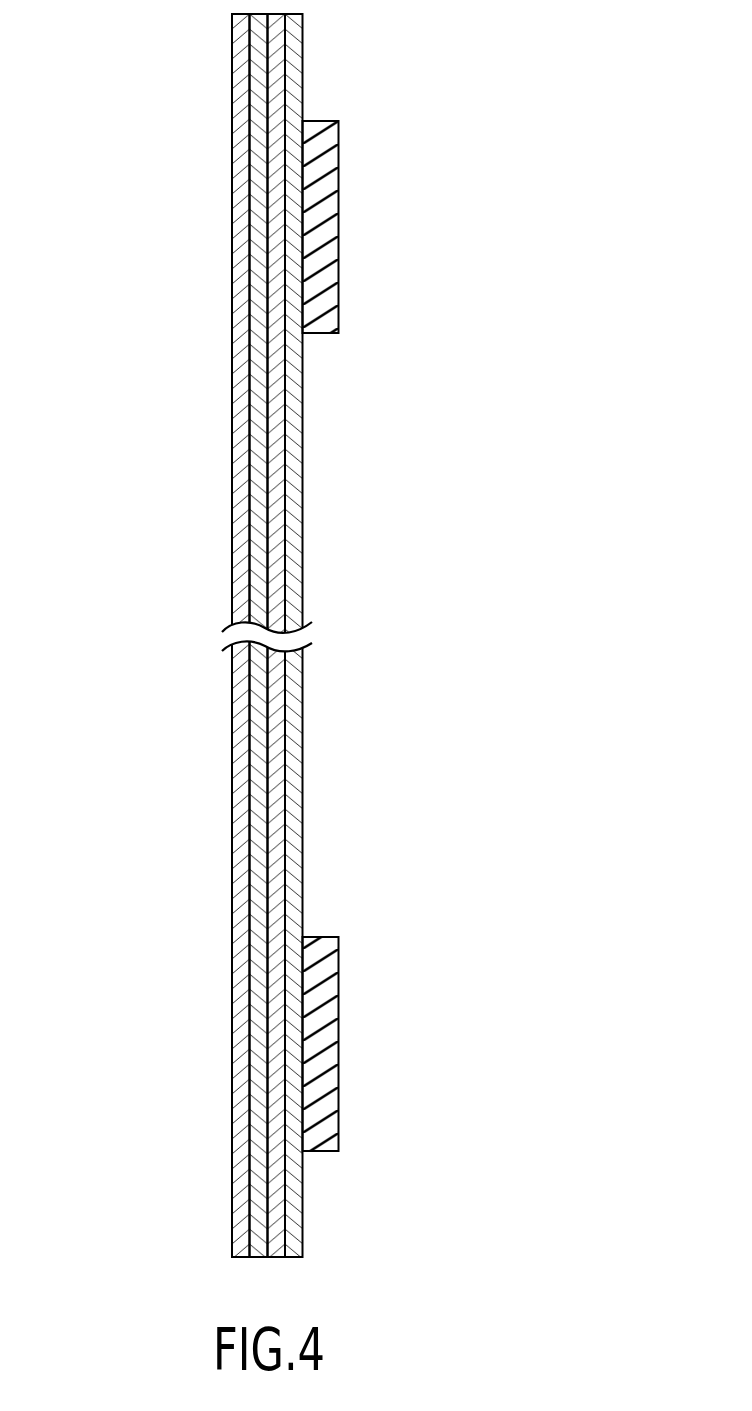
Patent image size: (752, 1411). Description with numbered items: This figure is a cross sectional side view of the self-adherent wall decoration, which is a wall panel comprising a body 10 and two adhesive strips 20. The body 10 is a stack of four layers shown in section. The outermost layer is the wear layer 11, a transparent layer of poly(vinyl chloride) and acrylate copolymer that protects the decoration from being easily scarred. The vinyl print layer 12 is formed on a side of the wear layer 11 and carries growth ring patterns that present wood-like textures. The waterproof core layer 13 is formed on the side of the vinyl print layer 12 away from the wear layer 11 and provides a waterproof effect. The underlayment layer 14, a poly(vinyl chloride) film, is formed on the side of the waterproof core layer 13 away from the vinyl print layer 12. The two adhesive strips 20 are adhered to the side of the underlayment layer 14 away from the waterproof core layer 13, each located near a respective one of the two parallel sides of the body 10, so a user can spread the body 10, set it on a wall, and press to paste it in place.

The body 10 is at (243, 635).
The wear layer 11 is at (242, 312).
The vinyl print layer 12 is at (258, 385).
The waterproof core layer 13 is at (277, 461).
The underlayment layer 14 is at (294, 570).
The adhesive strips 20 is at (322, 232).